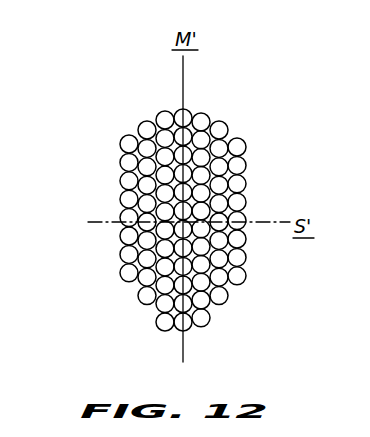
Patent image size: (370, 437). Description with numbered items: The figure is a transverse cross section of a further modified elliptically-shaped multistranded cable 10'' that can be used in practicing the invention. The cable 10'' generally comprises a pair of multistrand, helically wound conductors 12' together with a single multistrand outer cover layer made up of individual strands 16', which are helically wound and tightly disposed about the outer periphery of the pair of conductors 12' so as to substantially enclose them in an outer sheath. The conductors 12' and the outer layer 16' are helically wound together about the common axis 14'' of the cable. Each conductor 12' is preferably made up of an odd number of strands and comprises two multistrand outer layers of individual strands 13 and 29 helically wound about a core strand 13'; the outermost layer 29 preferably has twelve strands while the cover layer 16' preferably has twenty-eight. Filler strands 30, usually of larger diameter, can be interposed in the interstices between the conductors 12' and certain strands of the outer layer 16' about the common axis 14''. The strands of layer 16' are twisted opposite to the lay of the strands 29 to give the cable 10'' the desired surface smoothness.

The elliptically-shaped cable 10'' is at (233, 203).
The multistrand helically wound conductor 12' is at (177, 210).
The outer strand 13 is at (214, 213).
The core strand 13' is at (119, 258).
The common axis 14'' is at (100, 288).
The outer cover layer strand 16' is at (275, 220).
The outermost multistrand layer 29 is at (157, 112).
The filler strand 30 is at (207, 215).